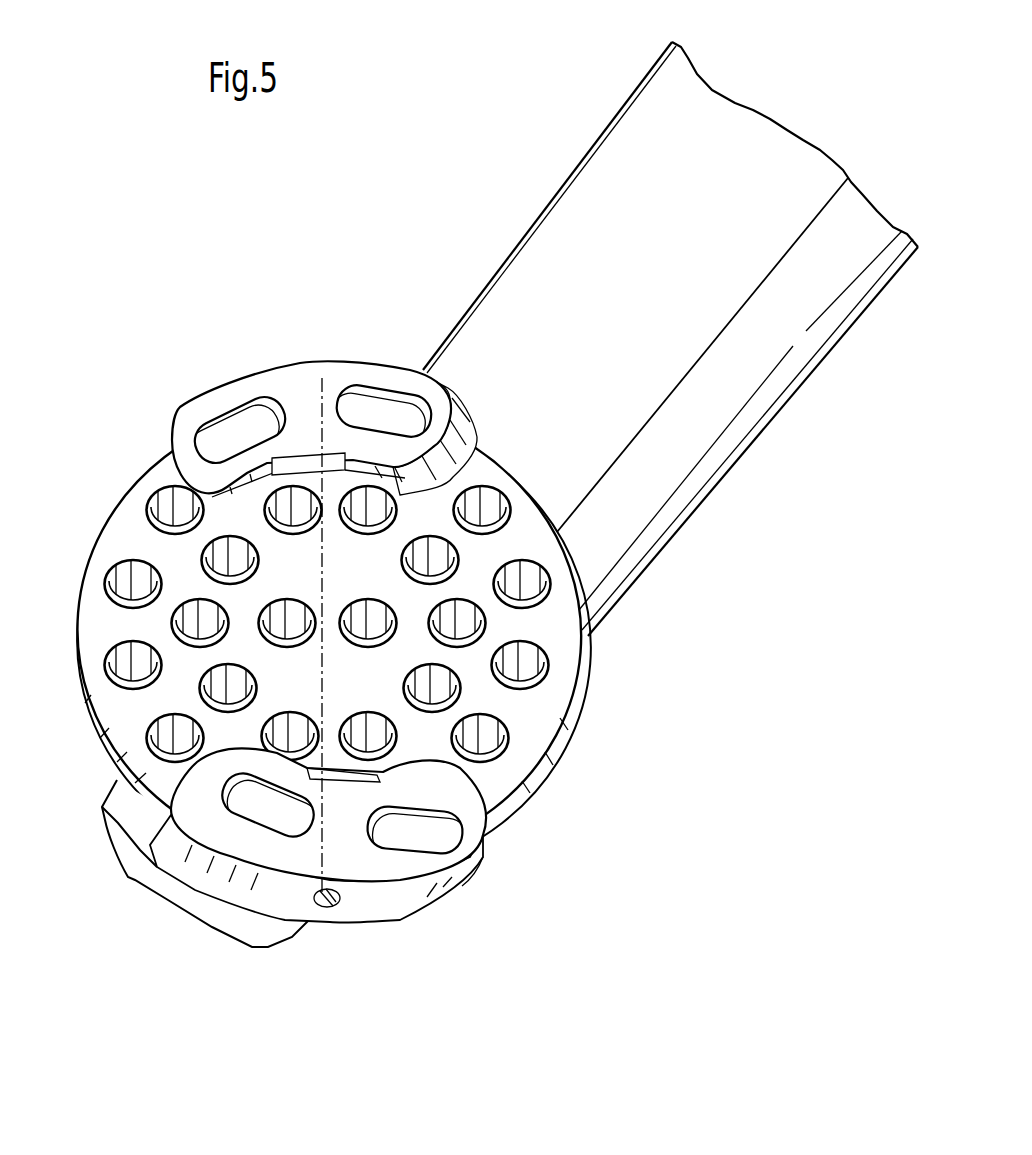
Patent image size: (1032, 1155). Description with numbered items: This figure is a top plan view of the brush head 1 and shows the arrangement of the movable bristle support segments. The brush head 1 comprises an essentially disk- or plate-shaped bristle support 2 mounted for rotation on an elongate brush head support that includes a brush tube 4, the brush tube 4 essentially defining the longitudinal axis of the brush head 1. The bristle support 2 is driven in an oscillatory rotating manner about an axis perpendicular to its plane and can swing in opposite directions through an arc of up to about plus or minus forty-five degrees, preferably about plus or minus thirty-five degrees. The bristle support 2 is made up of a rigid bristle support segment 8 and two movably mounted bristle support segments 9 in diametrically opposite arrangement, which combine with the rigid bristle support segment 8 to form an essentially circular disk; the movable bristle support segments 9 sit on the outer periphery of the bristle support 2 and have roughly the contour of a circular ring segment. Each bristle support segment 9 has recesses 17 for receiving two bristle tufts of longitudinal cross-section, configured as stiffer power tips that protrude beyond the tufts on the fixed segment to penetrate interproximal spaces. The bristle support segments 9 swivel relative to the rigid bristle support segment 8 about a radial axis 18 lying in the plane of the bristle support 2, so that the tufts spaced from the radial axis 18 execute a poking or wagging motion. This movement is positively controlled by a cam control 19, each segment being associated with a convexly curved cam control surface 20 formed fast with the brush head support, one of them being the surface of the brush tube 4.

The brush head 1 is at (692, 617).
The bristle support 2 is at (78, 617).
The brush tube 4 is at (505, 264).
The rigid bristle support segment 8 is at (128, 520).
The movable bristle support segment 9 is at (300, 375).
The recess 17 is at (388, 392).
The radial axis 18 is at (317, 407).
The cam control 19 is at (395, 930).
The cam control surface 20 is at (128, 822).